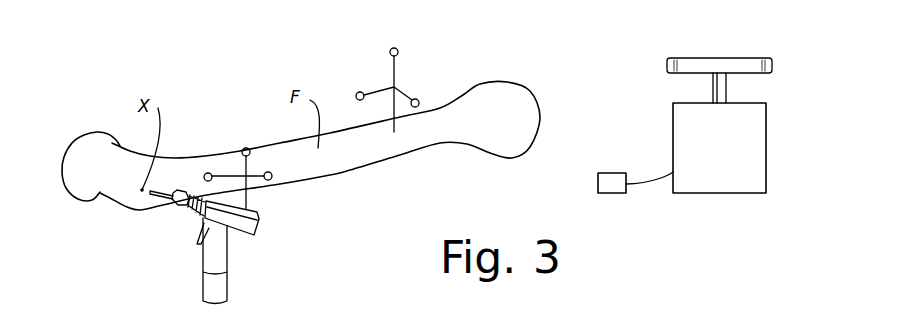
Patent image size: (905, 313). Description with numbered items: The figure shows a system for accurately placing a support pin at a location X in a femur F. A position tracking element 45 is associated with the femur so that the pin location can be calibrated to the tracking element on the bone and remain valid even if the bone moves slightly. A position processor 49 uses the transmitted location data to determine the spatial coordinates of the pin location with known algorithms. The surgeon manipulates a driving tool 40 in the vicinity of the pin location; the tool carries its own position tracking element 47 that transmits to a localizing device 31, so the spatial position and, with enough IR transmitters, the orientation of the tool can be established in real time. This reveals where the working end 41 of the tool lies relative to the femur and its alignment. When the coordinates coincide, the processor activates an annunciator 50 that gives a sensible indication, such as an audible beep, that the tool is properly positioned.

The localizing device 31 is at (690, 65).
The driving tool 40 is at (218, 258).
The working end 41 is at (161, 198).
The position tracking element 45 is at (397, 67).
The position tracking element 47 is at (242, 162).
The position processor 49 is at (752, 132).
The annunciator 50 is at (612, 183).